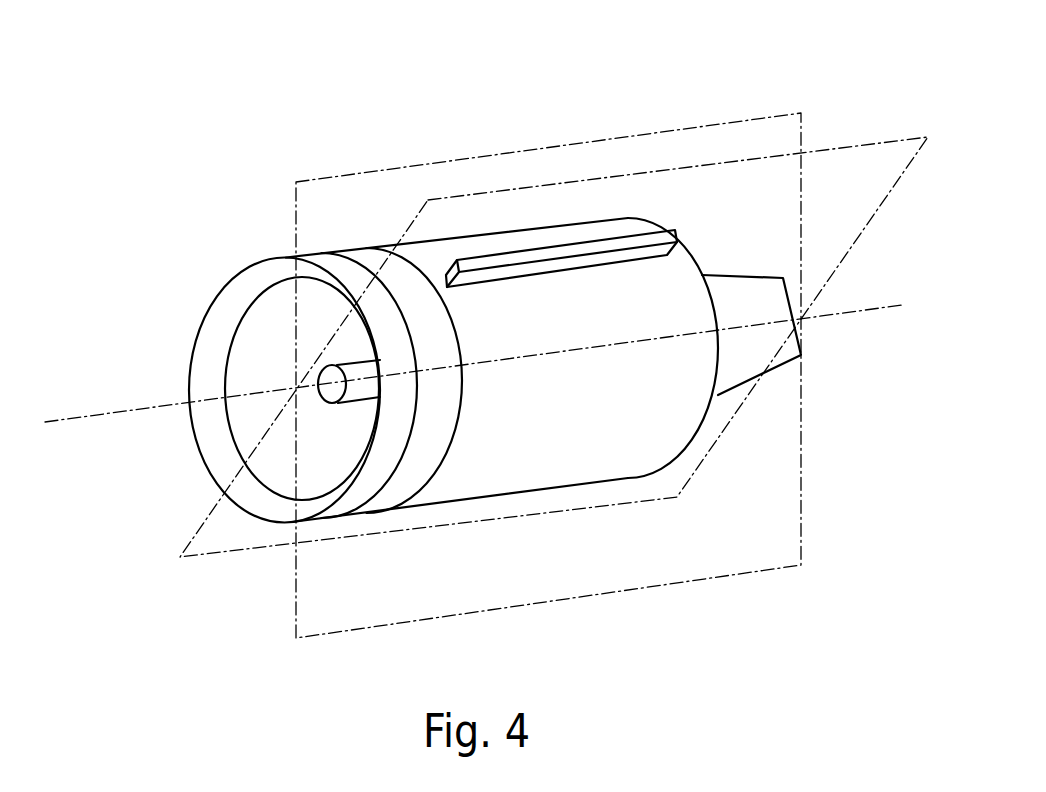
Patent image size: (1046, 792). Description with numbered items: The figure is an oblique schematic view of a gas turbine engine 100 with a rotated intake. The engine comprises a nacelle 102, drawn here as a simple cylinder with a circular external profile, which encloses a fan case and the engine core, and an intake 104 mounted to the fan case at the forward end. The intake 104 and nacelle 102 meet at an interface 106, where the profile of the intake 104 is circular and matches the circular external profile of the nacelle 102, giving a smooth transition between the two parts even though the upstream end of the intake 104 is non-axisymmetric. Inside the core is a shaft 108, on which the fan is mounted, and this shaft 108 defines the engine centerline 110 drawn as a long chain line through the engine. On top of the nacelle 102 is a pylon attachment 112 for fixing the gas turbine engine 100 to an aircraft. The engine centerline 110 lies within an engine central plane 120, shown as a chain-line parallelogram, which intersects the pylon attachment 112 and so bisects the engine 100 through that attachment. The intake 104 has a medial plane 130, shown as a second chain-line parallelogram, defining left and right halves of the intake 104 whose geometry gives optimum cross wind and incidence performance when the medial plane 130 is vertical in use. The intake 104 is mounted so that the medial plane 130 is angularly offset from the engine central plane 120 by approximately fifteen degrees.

The gas turbine engine 100 is at (167, 73).
The nacelle 102 is at (650, 222).
The intake 104 is at (263, 260).
The interface 106 is at (438, 468).
The shaft 108 is at (355, 396).
The engine centerline 110 is at (92, 415).
The pylon attachment 112 is at (572, 252).
The engine central plane 120 is at (875, 215).
The medial plane 130 is at (802, 475).